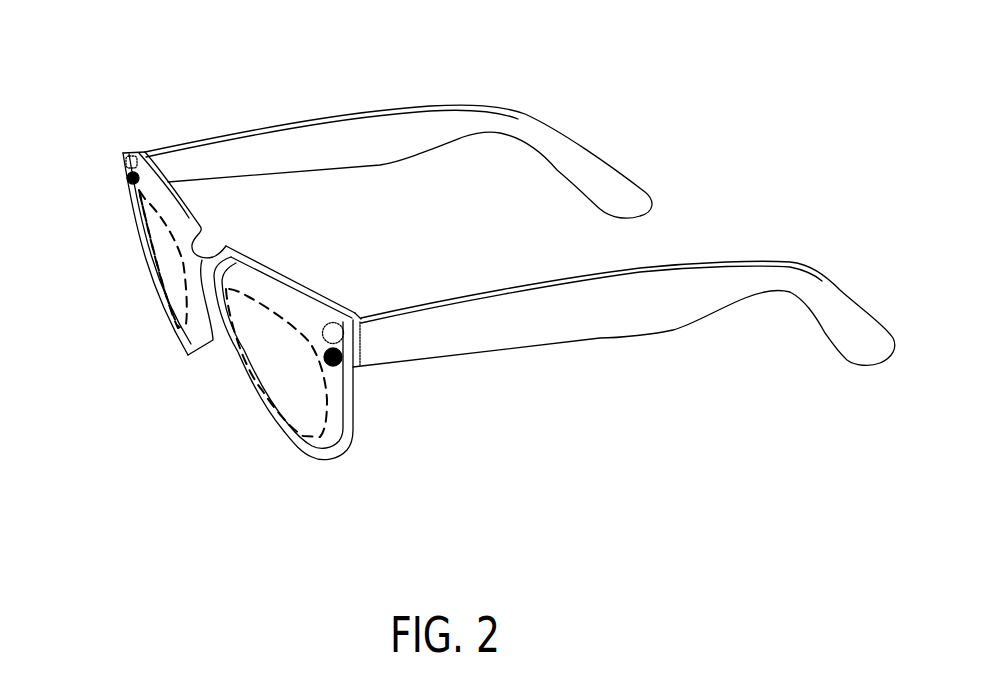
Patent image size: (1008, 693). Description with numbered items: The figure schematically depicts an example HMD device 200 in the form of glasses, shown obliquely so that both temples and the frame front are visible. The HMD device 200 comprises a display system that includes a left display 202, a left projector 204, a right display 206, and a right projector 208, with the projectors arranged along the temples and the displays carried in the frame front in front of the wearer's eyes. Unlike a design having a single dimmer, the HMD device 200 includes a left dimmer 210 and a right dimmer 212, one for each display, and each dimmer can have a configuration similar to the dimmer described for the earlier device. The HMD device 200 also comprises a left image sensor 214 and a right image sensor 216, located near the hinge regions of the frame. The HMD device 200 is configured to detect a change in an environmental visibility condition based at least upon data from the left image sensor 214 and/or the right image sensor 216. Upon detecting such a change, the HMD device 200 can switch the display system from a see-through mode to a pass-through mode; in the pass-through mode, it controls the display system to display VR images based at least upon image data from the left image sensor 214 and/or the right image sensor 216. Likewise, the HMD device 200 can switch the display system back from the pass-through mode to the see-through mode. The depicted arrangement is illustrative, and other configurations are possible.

The HMD device 200 is at (214, 52).
The left display 202 is at (307, 475).
The left projector 204 is at (345, 285).
The right display 206 is at (143, 304).
The right projector 208 is at (122, 138).
The left dimmer 210 is at (232, 358).
The right dimmer 212 is at (137, 210).
The left image sensor 214 is at (339, 364).
The right image sensor 216 is at (130, 178).